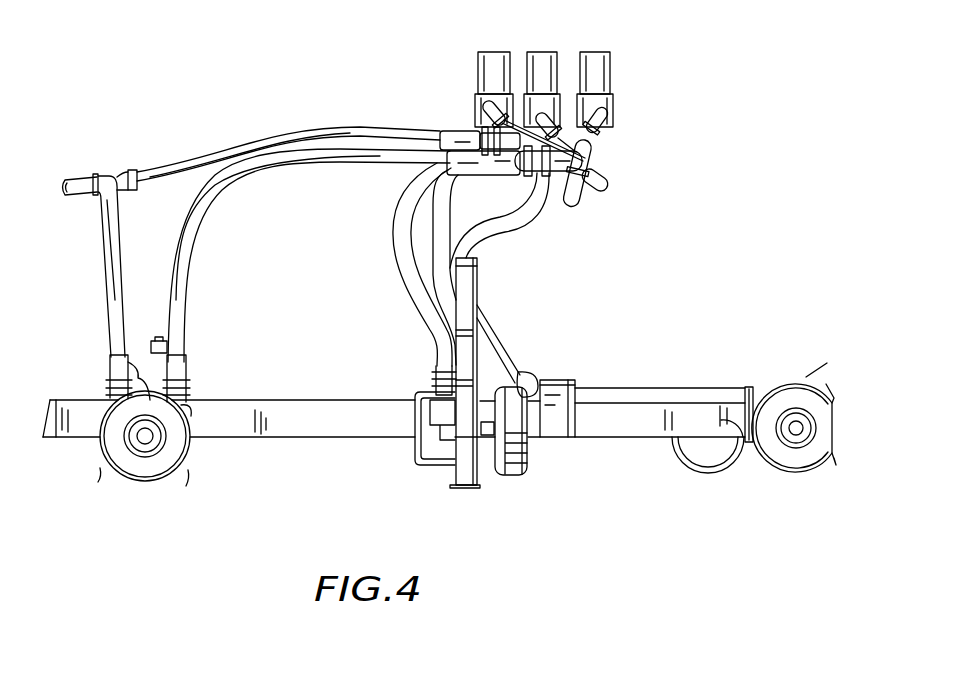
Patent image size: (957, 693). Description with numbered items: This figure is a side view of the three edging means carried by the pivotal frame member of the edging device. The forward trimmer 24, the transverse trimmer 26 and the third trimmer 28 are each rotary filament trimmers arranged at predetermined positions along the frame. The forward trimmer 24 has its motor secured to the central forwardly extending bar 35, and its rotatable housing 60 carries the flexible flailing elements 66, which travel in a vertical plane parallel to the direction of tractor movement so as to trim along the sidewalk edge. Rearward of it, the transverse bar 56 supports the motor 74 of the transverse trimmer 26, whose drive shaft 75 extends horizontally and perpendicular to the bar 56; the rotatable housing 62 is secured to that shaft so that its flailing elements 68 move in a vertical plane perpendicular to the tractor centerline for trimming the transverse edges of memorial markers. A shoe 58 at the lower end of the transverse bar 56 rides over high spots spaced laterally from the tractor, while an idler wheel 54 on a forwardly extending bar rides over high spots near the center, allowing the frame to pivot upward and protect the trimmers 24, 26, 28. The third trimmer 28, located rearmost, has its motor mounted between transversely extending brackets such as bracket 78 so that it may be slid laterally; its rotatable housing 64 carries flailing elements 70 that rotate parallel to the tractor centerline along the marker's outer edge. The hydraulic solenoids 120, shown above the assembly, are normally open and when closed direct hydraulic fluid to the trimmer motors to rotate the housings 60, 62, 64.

The forward trimmer 24 is at (785, 384).
The transverse trimmer 26 is at (528, 379).
The third trimmer 28 is at (140, 463).
The central forwardly extending bar 35 is at (246, 400).
The idler wheel 54 is at (695, 462).
The transverse bar 56 is at (470, 285).
The shoe 58 is at (477, 488).
The rotatable housing 60 is at (798, 466).
The rotatable housing 62 is at (523, 455).
The rotatable housing 64 is at (180, 443).
The flexible flailing elements 66 is at (807, 377).
The flexible flailing elements 68 is at (522, 383).
The flexible flailing elements 70 is at (67, 486).
The motor 74 is at (447, 440).
The drive shaft 75 is at (487, 432).
The transversely extending bracket 78 is at (138, 363).
The hydraulic solenoids 120 is at (478, 72).